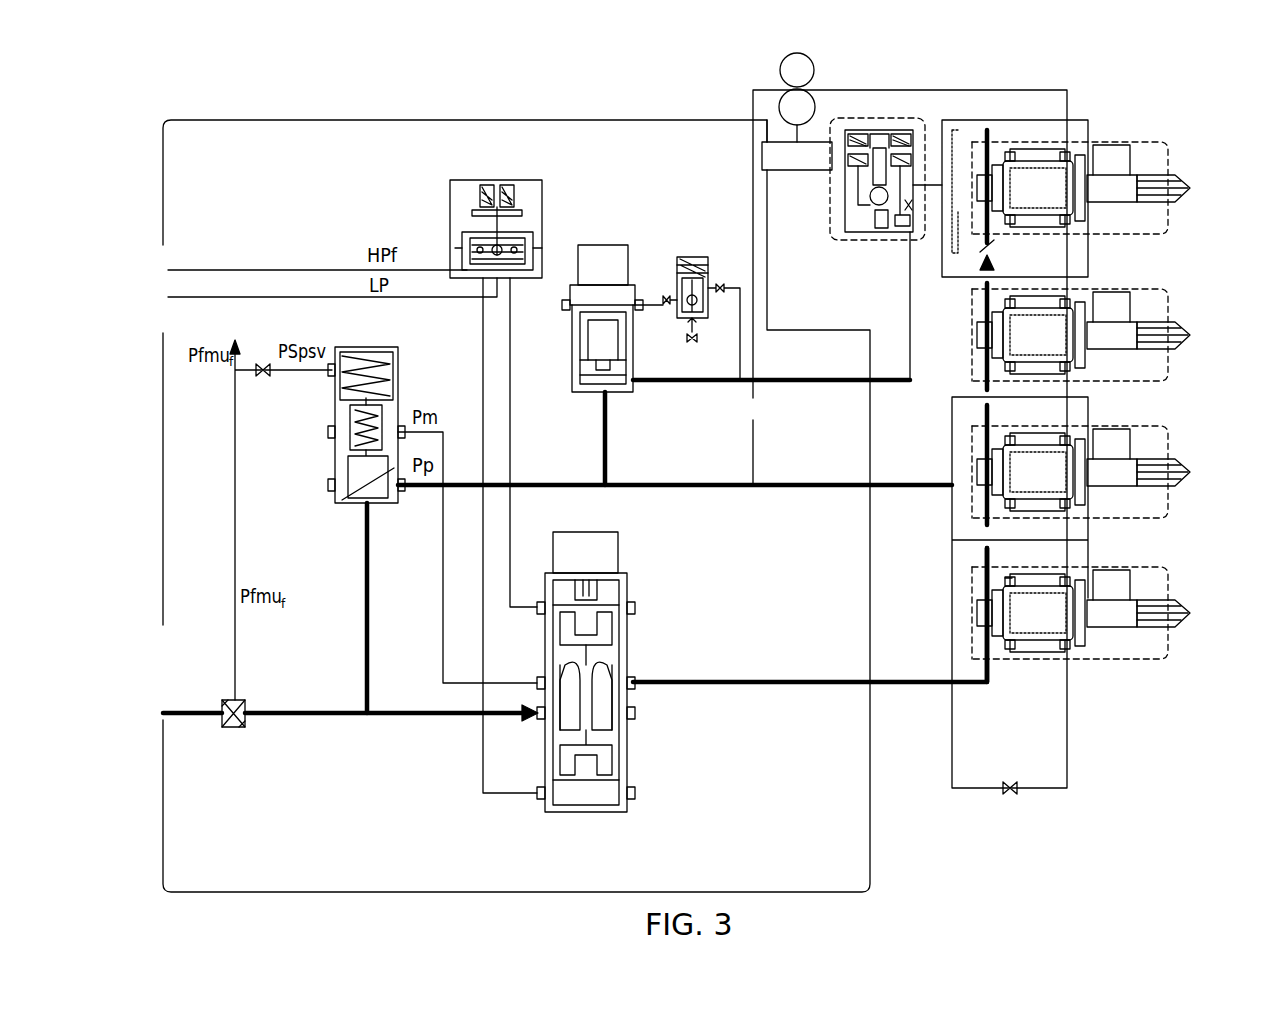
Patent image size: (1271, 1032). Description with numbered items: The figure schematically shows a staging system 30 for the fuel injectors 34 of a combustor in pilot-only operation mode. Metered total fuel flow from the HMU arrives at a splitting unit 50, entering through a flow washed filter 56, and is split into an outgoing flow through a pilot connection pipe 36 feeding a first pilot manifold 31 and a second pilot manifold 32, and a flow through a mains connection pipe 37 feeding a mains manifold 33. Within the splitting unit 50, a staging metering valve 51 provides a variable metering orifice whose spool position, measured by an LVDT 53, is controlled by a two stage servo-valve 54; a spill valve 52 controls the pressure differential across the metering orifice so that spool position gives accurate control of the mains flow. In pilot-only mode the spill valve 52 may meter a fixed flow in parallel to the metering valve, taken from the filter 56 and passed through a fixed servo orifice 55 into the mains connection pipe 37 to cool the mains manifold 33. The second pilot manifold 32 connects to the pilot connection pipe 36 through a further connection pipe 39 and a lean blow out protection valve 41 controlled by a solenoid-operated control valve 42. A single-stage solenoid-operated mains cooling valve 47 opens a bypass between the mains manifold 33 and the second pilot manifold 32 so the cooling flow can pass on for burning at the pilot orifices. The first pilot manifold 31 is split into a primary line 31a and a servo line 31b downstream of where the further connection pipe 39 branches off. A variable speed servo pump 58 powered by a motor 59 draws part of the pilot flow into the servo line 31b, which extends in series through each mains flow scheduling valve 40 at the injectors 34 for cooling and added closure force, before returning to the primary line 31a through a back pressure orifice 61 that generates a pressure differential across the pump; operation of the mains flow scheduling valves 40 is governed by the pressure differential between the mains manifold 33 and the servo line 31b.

The staging system 30 is at (663, 86).
The first pilot manifold 31 is at (1048, 532).
The primary line 31a is at (952, 578).
The servo line 31b is at (1065, 526).
The second pilot manifold 32 is at (936, 118).
The mains manifold 33 is at (992, 668).
The fuel injectors 34 is at (1112, 141).
The pilot connection pipe 36 is at (535, 489).
The mains connection pipe 37 is at (700, 685).
The further connection pipe 39 is at (672, 395).
The mains flow scheduling valves 40 is at (990, 160).
The lean blow out protection valve 41 is at (570, 336).
The solenoid-operated control valve 42 is at (691, 256).
The mains cooling valve 47 is at (830, 240).
The splitting unit 50 is at (445, 120).
The staging metering valve 51 is at (633, 773).
The spill valve 52 is at (366, 352).
The LVDT 53 is at (585, 552).
The two stage servo-valve 54 is at (543, 184).
The fixed servo orifice 55 is at (266, 382).
The flow washed filter 56 is at (233, 728).
The variable speed servo pump 58 is at (781, 72).
The motor 59 is at (793, 172).
The back pressure orifice 61 is at (1009, 782).